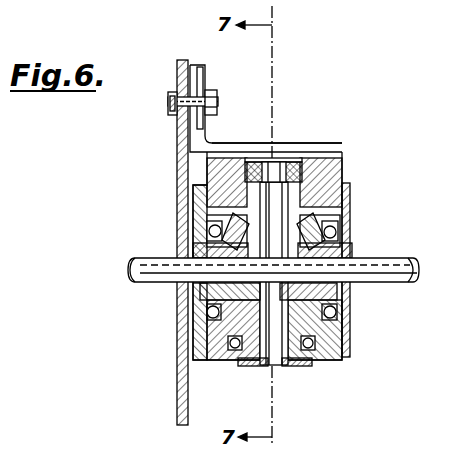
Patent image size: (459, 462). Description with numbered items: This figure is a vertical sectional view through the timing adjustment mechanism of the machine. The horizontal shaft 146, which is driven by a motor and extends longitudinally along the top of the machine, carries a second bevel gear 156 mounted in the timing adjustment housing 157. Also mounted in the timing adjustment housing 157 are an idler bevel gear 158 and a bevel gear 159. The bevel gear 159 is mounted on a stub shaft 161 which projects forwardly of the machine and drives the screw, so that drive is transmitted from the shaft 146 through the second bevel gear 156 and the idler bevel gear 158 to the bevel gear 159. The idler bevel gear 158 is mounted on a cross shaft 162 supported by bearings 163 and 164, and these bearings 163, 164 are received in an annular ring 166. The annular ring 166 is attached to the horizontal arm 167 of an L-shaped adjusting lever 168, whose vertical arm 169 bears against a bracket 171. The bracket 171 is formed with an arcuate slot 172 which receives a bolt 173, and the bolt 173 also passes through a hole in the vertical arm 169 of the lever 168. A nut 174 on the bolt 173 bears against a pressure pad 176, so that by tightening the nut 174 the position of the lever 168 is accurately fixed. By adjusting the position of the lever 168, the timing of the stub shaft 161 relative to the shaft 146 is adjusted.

The shaft 146 is at (395, 282).
The second bevel gear 156 is at (345, 248).
The timing adjustment housing 157 is at (350, 185).
The idler bevel gear 158 is at (296, 366).
The bevel gear 159 is at (200, 288).
The stub shaft 161 is at (338, 220).
The cross shaft 162 is at (278, 158).
The bearing 163 is at (292, 158).
The bearing 164 is at (236, 366).
The annular ring 166 is at (262, 152).
The horizontal arm 167 is at (285, 145).
The L-shaped adjusting lever 168 is at (205, 142).
The vertical arm 169 is at (205, 70).
The bracket 171 is at (176, 146).
The arcuate slot 172 is at (178, 114).
The bolt 173 is at (168, 103).
The nut 174 is at (217, 97).
The pressure pad 176 is at (207, 80).